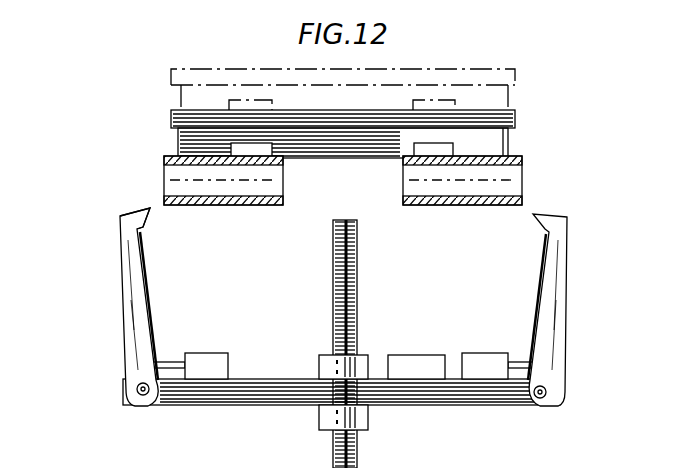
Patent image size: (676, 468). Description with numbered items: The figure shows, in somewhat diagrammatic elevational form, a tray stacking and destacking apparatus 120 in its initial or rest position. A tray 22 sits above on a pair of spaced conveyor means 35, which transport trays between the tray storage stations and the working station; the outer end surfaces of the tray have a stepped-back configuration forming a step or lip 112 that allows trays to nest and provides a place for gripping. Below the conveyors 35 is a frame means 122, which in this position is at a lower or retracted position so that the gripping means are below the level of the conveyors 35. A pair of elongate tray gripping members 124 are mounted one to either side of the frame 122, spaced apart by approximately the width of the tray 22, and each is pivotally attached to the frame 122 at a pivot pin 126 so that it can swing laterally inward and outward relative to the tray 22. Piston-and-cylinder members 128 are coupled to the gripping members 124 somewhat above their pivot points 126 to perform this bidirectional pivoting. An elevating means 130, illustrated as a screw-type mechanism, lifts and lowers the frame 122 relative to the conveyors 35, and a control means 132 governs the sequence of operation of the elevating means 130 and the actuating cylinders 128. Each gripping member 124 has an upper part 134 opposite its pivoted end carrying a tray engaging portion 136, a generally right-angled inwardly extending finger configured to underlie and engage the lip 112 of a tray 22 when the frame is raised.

The step or lip 112 is at (171, 129).
The tray 22 is at (508, 140).
The conveyor means 35 is at (210, 206).
The tray stacking and destacking apparatus 120 is at (332, 296).
The frame means 122 is at (250, 400).
The tray gripping members 124 is at (124, 258).
The pivot pins 126 is at (126, 398).
The piston-and-cylinder members 128 is at (205, 352).
The elevating means 130 is at (362, 349).
The control means 132 is at (410, 367).
The upper part 134 is at (120, 216).
The tray engaging portion 136 is at (130, 212).